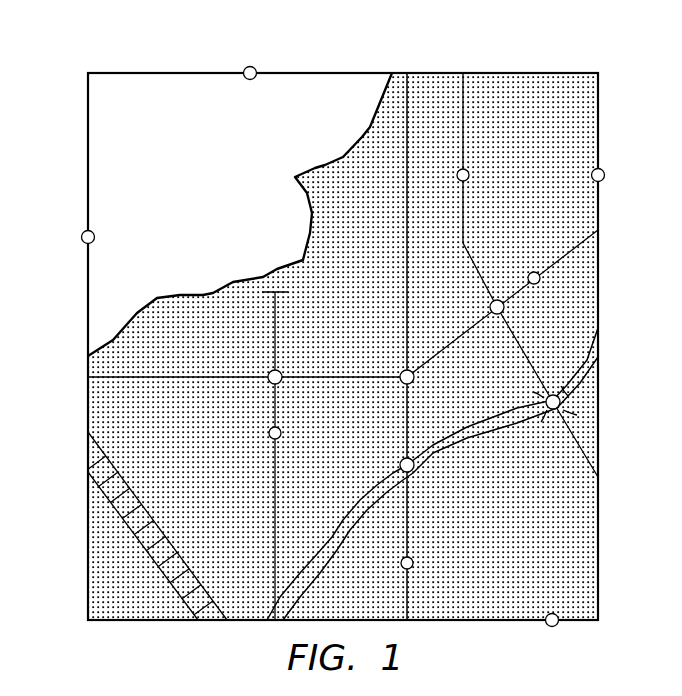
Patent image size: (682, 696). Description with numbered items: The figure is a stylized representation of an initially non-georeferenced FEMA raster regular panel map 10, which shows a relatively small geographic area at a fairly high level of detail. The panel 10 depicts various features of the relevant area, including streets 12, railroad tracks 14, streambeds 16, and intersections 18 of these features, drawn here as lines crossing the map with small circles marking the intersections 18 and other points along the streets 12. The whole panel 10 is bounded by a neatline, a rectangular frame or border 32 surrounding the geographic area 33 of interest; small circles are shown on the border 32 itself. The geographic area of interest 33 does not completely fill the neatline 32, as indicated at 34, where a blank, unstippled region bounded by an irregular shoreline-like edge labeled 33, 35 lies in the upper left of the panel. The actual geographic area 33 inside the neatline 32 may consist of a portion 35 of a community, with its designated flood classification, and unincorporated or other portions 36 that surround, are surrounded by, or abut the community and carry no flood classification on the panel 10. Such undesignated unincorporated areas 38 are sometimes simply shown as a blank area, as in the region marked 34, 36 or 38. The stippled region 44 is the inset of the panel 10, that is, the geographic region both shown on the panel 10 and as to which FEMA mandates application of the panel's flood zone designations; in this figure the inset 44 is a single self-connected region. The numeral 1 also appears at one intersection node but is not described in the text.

The node 1 is at (553, 417).
The regular panel map 10 is at (552, 72).
The streets 12 is at (470, 175).
The railroad tracks 14 is at (178, 548).
The streambeds 16 is at (472, 435).
The intersections 18 is at (270, 374).
The neatline 32 is at (250, 66).
The geographic area of interest 33 is at (240, 214).
The unfilled area 34 is at (234, 179).
The portion of a community 35 is at (216, 293).
The unincorporated or other portions 36 is at (234, 179).
The unincorporated areas 38 is at (143, 98).
The inset 44 is at (573, 110).